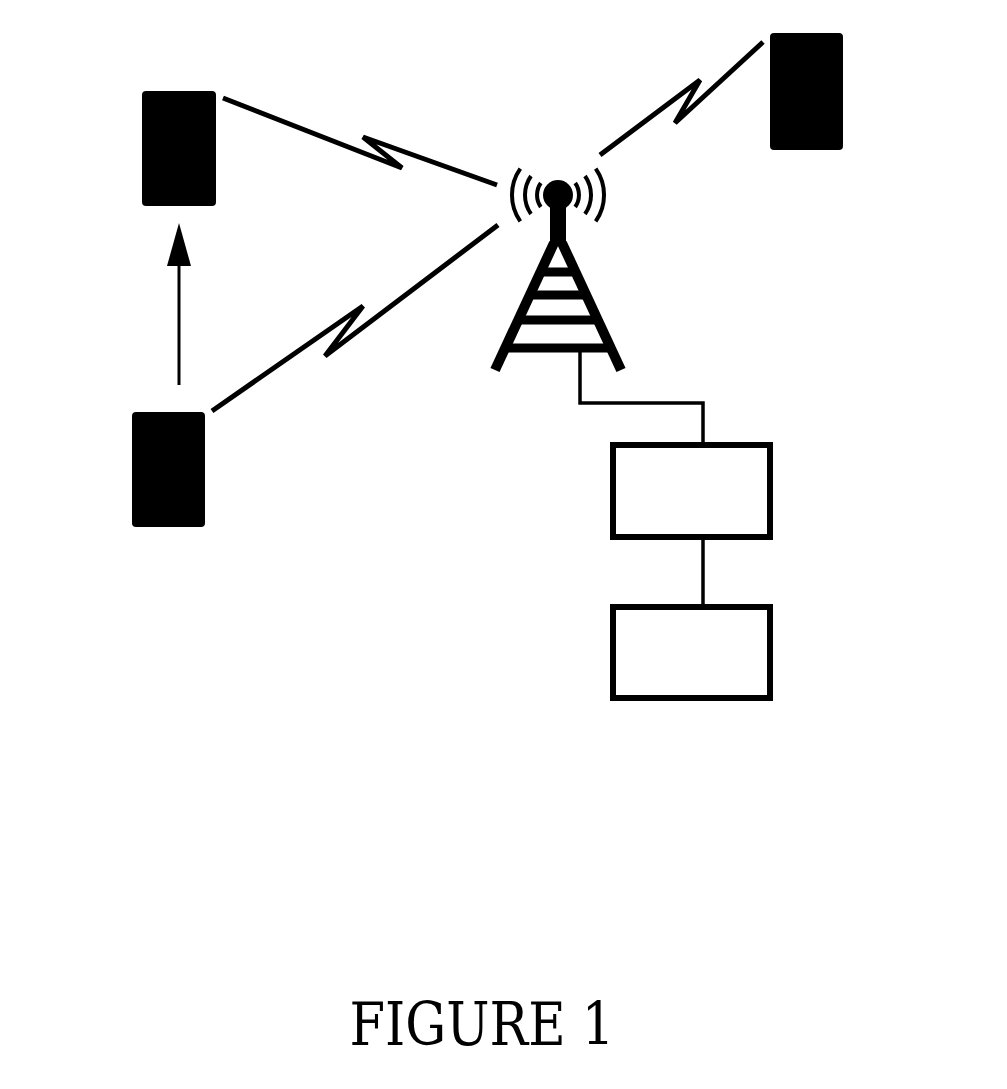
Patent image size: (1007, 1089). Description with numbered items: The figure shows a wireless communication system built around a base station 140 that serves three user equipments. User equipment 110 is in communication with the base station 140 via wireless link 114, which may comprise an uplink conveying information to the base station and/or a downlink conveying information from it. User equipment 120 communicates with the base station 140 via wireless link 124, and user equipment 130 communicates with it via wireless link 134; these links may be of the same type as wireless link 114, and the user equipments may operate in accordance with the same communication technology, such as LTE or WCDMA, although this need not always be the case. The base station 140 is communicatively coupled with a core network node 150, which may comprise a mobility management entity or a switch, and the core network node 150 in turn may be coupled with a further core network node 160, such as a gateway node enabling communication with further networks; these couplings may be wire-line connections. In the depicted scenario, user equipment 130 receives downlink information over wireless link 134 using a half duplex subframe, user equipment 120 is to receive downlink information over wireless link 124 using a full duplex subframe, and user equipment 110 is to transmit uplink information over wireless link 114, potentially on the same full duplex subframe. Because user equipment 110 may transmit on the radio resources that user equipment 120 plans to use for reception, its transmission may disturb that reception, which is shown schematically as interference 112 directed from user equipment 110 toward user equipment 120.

The user equipment 110 is at (132, 477).
The interference 112 is at (177, 330).
The wireless link 114 is at (353, 330).
The user equipment 120 is at (143, 165).
The wireless link 124 is at (388, 140).
The user equipment 130 is at (812, 150).
The wireless link 134 is at (689, 95).
The base station 140 is at (534, 356).
The core network node 150 is at (691, 491).
The further core network node 160 is at (691, 652).